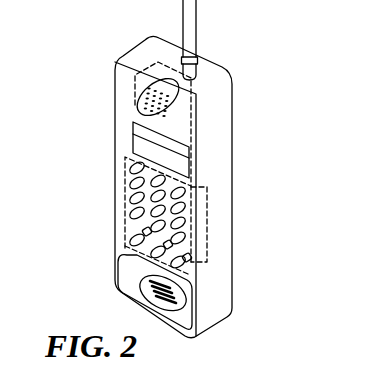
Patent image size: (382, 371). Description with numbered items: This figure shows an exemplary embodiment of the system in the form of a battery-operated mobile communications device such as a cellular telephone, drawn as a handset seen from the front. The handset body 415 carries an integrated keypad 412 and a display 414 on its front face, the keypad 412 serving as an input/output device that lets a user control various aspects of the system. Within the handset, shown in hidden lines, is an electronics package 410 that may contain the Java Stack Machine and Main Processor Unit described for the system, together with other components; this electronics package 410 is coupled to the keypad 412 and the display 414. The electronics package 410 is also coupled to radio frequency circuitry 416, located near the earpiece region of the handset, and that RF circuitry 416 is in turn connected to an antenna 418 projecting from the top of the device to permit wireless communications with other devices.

The electronics package 410 is at (206, 228).
The keypad 412 is at (130, 212).
The display 414 is at (136, 151).
The housing 415 is at (229, 277).
The radio frequency (RF) circuitry 416 is at (148, 114).
The antenna 418 is at (197, 19).